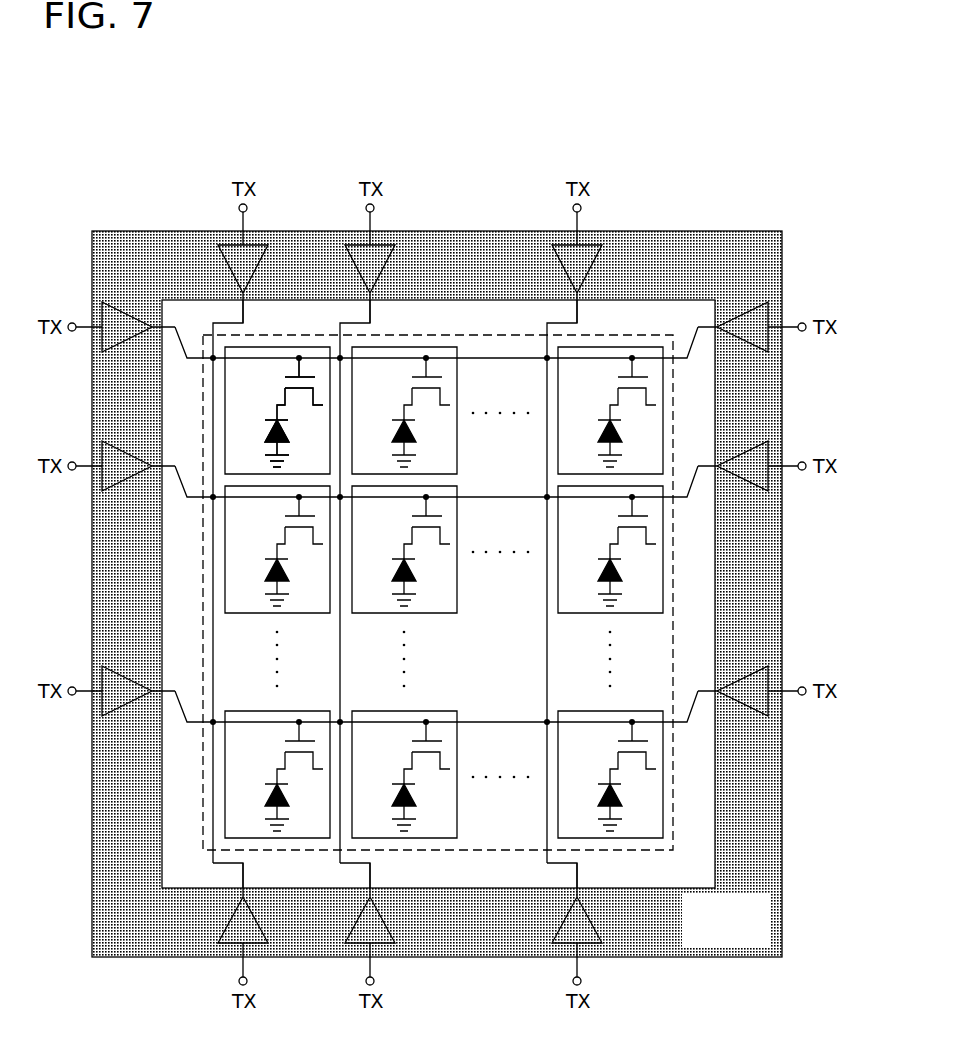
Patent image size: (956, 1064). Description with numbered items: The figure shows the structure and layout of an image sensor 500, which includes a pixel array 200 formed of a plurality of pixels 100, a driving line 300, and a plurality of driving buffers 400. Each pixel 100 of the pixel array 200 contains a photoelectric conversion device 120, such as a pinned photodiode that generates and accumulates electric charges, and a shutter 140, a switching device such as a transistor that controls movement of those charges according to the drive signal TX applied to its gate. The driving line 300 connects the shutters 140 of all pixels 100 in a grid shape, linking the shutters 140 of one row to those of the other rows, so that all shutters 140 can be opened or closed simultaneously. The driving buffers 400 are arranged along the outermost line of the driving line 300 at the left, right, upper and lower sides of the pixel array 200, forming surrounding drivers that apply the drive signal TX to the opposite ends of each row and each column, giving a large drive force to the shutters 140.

The image sensor 500 is at (455, 158).
The driving buffers 400 is at (128, 310).
The driving line 300 is at (496, 358).
The pixel array 200 is at (653, 335).
The pixel 100 is at (292, 347).
The shutter 140 is at (283, 395).
The photoelectric conversion device 120 is at (265, 430).